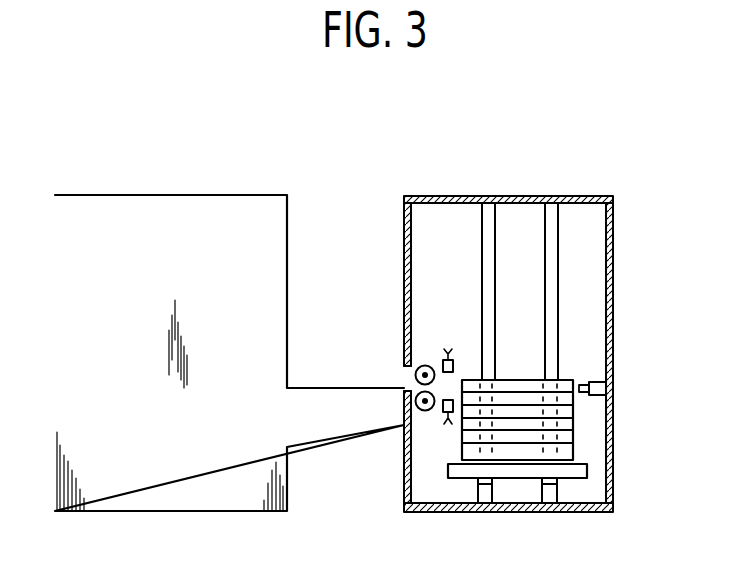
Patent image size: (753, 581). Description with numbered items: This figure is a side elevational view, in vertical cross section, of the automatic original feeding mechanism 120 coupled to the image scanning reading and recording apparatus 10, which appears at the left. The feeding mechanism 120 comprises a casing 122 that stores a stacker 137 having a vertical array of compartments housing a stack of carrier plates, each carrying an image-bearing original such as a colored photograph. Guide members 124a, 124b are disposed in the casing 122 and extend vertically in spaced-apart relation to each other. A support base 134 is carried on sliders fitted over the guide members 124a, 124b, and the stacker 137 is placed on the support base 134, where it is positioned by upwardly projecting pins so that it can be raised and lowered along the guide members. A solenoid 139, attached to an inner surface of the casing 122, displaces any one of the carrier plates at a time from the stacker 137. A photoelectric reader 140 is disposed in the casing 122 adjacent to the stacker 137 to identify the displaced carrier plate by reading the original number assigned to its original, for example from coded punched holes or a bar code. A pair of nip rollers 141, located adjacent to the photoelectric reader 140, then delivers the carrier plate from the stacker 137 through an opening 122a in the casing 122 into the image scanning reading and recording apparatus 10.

The image scanning reading and recording apparatus 10 is at (236, 188).
The automatic original feeding mechanism 120 is at (497, 327).
The casing 122 is at (615, 255).
The opening 122a is at (405, 383).
The guide member 124a is at (482, 269).
The guide member 124b is at (558, 280).
The stacker 137 is at (515, 370).
The support base 134 is at (523, 473).
The solenoid 139 is at (610, 388).
The photoelectric reader 140 is at (441, 413).
The nip rollers 141 is at (415, 372).